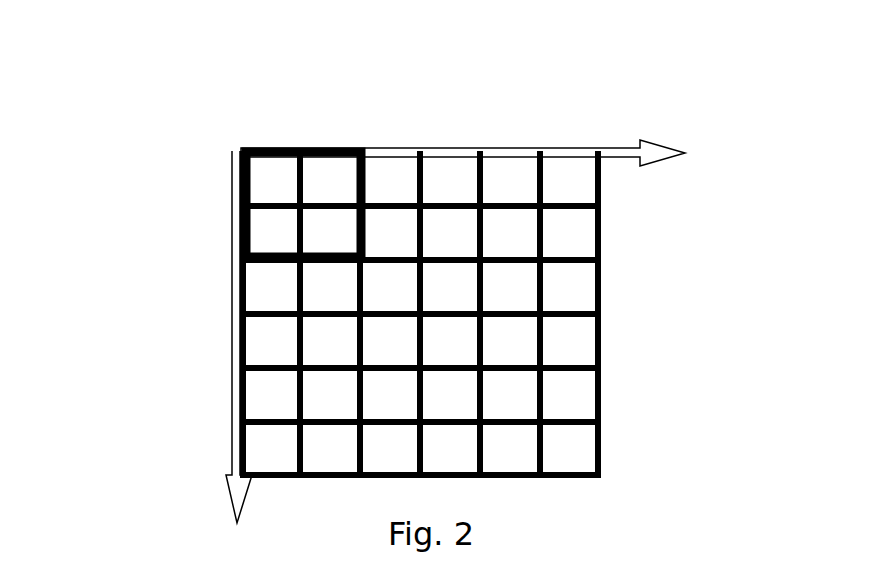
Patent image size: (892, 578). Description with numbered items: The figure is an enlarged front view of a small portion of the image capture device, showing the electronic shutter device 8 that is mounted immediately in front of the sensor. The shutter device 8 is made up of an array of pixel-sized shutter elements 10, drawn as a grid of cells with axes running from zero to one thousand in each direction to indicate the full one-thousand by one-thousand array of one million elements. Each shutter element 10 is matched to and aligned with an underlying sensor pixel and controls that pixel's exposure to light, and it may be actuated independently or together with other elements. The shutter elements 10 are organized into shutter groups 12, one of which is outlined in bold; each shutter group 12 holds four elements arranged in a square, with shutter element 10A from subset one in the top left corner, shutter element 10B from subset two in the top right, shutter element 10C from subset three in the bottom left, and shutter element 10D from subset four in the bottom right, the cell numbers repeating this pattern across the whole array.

The electronic shutter device 8 is at (502, 160).
The shutter element 10 is at (412, 271).
The shutter element from subset 1 10A is at (270, 165).
The shutter element from subset 2 10B is at (322, 165).
The shutter element from subset 3 10C is at (257, 219).
The shutter element from subset 4 10D is at (318, 244).
The shutter group 12 is at (360, 150).